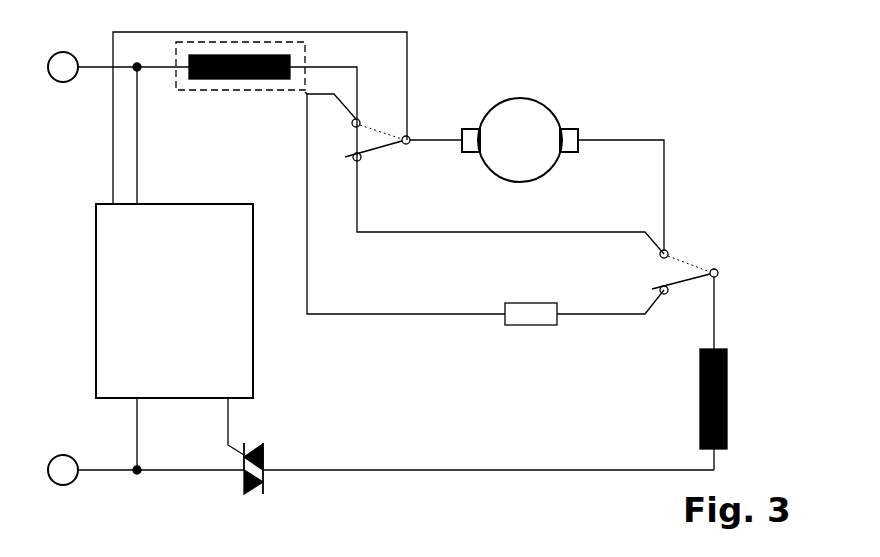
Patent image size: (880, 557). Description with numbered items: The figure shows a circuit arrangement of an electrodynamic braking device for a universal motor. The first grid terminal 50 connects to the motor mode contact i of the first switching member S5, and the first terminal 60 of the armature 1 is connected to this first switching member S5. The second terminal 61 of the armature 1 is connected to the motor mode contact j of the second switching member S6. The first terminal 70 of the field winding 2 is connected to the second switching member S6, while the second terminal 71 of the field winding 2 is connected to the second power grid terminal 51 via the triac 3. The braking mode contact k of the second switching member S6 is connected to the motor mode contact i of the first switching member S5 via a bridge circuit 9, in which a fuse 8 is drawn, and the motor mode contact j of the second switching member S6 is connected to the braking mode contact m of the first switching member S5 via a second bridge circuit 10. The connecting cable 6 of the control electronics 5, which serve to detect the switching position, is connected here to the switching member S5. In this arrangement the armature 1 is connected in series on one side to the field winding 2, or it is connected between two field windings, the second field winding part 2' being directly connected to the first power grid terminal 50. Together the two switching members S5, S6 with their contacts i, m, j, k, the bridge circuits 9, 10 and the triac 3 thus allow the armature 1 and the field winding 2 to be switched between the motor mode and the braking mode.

The armature 1 is at (520, 97).
The field winding 2 is at (691, 399).
The second field winding part 2' is at (240, 90).
The triac 3 is at (255, 495).
The control electronics 5 is at (96, 300).
The connecting cable 6 is at (113, 158).
The fuse 8 is at (530, 327).
The bridge circuit 9 is at (435, 316).
The second bridge circuit 10 is at (437, 234).
The first grid terminal 50 is at (63, 50).
The second power grid terminal 51 is at (63, 455).
The first terminal of the armature 60 is at (435, 142).
The second terminal of the armature 61 is at (620, 142).
The first terminal of the field winding 70 is at (716, 333).
The second terminal of the field winding 71 is at (716, 460).
The first switching member S5 is at (408, 136).
The second switching member S6 is at (718, 273).
The motor mode contact i is at (360, 119).
The braking mode contact m is at (361, 160).
The motor mode contact j is at (668, 252).
The braking mode contact k is at (667, 294).